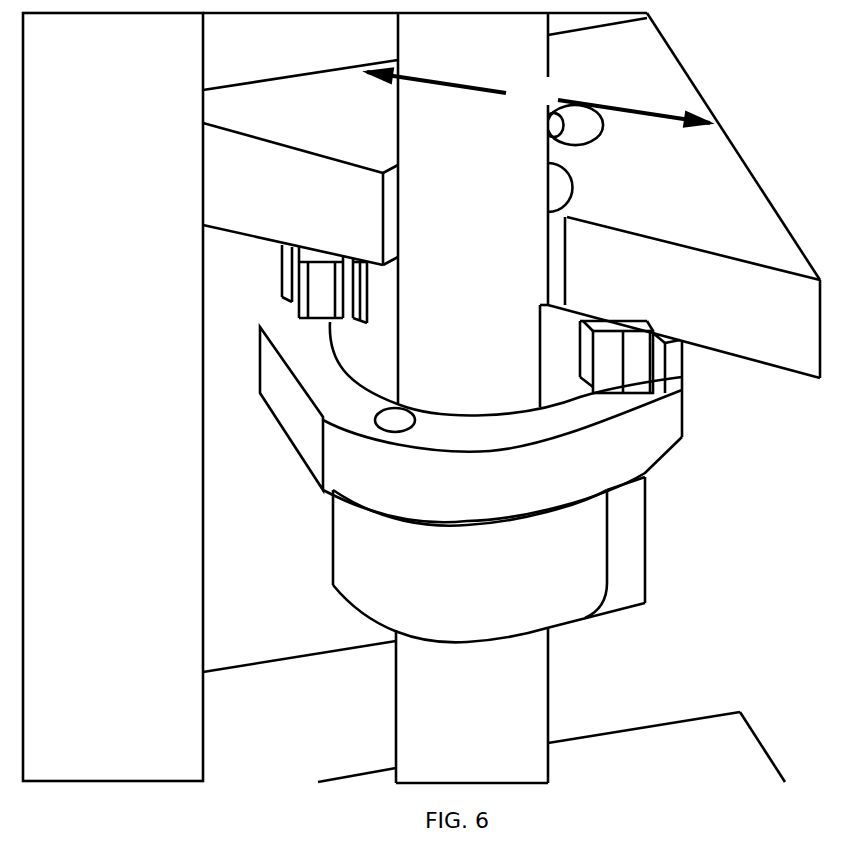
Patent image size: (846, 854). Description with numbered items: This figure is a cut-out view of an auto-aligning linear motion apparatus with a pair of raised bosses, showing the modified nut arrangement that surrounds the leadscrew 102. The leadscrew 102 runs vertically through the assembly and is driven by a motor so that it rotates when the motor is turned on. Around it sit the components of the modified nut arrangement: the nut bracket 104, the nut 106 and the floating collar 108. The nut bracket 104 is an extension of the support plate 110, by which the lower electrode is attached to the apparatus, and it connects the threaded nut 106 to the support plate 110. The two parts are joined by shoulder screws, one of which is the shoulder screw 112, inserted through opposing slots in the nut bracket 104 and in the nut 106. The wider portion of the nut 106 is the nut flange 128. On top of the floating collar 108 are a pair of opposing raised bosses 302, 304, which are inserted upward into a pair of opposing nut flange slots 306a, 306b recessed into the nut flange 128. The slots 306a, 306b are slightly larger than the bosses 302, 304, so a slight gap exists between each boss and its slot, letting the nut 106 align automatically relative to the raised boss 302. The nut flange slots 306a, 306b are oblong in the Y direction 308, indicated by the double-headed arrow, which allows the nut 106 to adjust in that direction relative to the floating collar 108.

The leadscrew 102 is at (467, 690).
The nut bracket 104 is at (643, 206).
The nut 106 is at (425, 584).
The floating collar 108 is at (348, 469).
The support plate 110 is at (237, 46).
The shoulder screw 112 is at (293, 209).
The nut flange 128 is at (377, 290).
The raised boss 302 is at (330, 322).
The raised boss 304 is at (608, 364).
The nut flange slot 306a is at (282, 283).
The nut flange slot 306b is at (612, 365).
The Y direction 308 is at (538, 97).